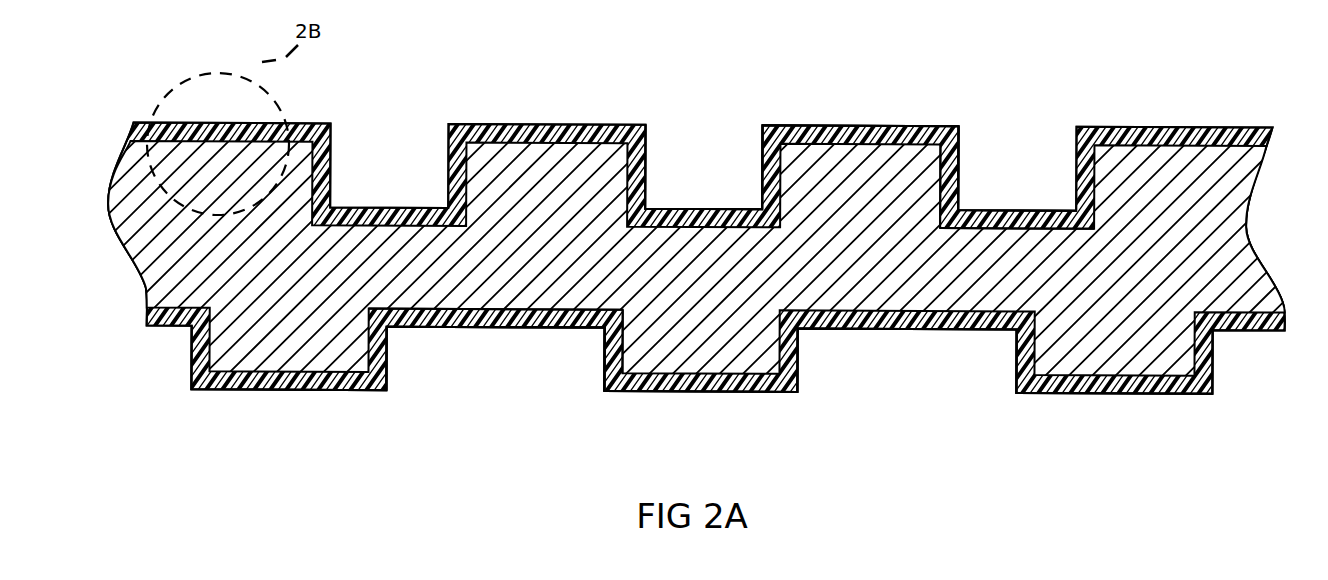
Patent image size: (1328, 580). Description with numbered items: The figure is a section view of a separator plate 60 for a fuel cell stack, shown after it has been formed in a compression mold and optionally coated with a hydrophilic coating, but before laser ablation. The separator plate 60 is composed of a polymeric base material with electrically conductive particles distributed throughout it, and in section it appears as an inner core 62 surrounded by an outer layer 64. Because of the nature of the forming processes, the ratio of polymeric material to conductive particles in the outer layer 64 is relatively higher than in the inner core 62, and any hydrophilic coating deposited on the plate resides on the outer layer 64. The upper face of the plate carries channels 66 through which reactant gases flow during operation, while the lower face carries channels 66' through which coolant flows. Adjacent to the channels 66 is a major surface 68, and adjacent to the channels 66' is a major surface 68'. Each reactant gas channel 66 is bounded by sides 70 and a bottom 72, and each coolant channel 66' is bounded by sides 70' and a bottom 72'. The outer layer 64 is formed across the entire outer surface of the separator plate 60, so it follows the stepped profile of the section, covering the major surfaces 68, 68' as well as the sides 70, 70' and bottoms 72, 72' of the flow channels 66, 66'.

The separator plate 60 is at (585, 86).
The inner core 62 is at (1232, 230).
The outer layer 64 is at (1082, 126).
The channel 66 is at (703, 131).
The major surface 68 is at (860, 134).
The side of flow channel 70 is at (984, 142).
The bottom of flow channel 72 is at (1017, 142).
The channel 66' is at (701, 383).
The major surface 68' is at (701, 396).
The side of flow channel 70' is at (580, 372).
The bottom of flow channel 72' is at (491, 371).